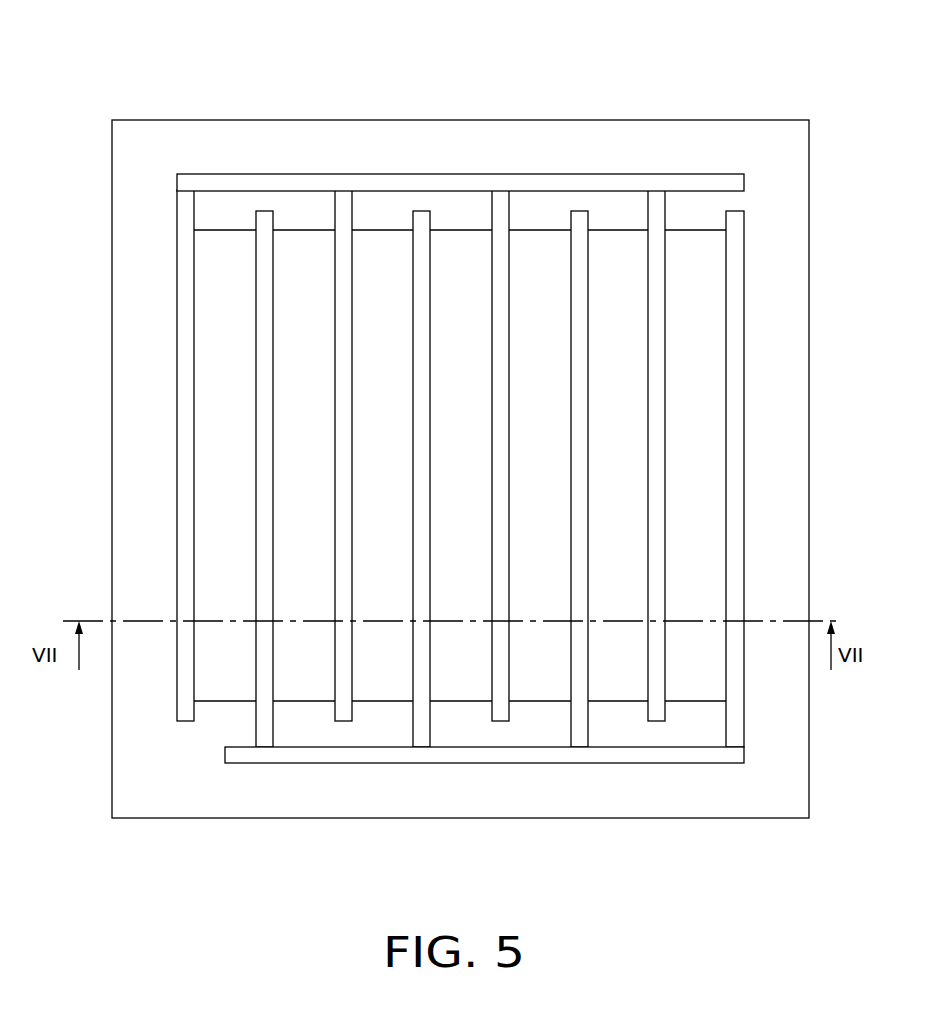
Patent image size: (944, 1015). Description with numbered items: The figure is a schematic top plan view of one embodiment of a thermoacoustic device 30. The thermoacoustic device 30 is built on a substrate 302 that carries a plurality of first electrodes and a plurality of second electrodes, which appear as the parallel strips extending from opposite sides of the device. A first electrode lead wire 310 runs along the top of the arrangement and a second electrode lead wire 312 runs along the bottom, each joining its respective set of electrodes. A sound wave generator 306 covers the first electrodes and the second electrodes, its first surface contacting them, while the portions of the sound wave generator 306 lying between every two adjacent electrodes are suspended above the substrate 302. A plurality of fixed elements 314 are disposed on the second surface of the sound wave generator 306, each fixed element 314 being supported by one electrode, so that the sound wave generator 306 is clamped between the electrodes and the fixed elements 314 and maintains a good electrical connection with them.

The thermoacoustic device 30 is at (576, 48).
The substrate 302 is at (153, 150).
The sound wave generator 306 is at (217, 314).
The first electrode lead wire 310 is at (376, 184).
The second electrode lead wire 312 is at (692, 752).
The fixed element 314 is at (735, 245).